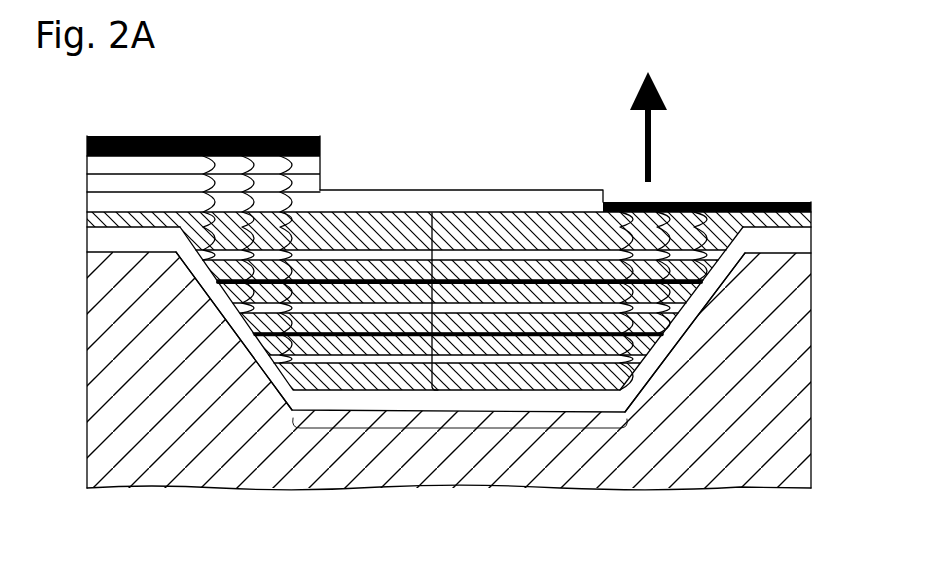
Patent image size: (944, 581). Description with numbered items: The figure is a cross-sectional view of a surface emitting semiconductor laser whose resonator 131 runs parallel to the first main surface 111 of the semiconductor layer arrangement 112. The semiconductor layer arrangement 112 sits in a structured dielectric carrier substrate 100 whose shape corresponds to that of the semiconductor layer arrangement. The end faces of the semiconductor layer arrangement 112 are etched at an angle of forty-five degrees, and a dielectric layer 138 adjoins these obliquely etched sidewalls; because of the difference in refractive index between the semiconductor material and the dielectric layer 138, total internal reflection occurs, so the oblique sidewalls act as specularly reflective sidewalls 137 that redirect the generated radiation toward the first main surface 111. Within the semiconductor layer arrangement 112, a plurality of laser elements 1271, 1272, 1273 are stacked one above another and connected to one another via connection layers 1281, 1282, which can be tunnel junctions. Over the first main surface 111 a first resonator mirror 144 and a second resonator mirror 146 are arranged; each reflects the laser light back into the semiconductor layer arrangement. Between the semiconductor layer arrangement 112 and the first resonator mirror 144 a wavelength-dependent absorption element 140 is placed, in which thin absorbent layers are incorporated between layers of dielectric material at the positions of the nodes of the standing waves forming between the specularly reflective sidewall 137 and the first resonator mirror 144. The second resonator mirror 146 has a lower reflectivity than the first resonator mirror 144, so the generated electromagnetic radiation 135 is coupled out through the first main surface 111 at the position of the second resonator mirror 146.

The carrier substrate 100 is at (800, 448).
The first main surface 111 is at (346, 230).
The semiconductor layer arrangement 112 is at (430, 273).
The laser element 1271 is at (501, 338).
The laser element 1272 is at (538, 333).
The laser element 1273 is at (478, 275).
The connection layer 1281 is at (384, 336).
The connection layer 1282 is at (343, 283).
The resonator 131 is at (449, 428).
The electromagnetic radiation 135 is at (653, 137).
The specularly reflective sidewall 137 is at (249, 334).
The dielectric layer 138 is at (222, 297).
The wavelength-dependent absorption element 140 is at (70, 156).
The first resonator mirror 144 is at (155, 136).
The second resonator mirror 146 is at (761, 202).